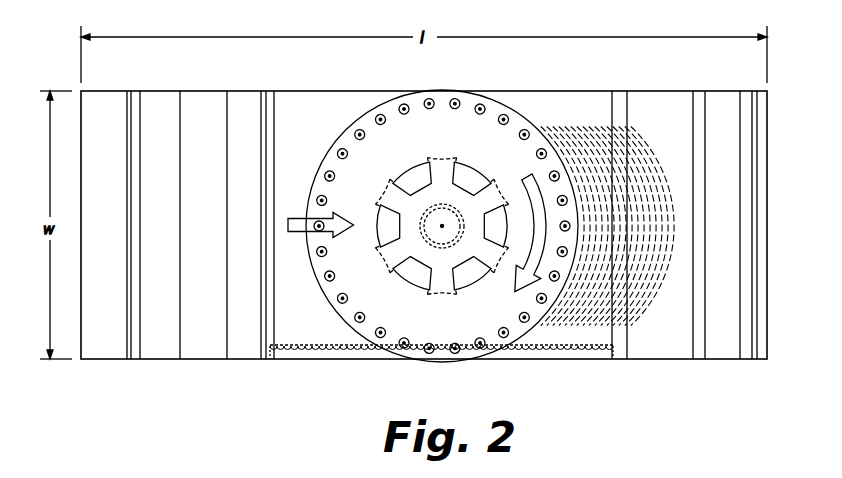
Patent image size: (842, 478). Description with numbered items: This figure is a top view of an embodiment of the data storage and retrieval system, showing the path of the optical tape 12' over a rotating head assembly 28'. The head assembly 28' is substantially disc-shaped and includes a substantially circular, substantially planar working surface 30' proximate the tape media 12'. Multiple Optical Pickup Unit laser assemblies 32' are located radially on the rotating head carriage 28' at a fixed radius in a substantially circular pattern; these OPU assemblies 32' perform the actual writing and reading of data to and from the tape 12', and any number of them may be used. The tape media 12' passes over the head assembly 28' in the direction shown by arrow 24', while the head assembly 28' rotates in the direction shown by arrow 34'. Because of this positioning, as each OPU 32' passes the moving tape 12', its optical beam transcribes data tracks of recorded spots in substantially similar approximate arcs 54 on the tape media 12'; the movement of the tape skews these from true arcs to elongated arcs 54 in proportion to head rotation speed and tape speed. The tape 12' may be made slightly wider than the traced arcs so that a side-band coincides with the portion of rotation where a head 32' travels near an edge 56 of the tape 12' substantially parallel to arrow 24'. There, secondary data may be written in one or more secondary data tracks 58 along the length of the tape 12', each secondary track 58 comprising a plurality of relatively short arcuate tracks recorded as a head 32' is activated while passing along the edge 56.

The optical tape 12' is at (424, 207).
The arrow 24' is at (275, 252).
The head assembly 28' is at (429, 209).
The working surface 30' is at (384, 288).
The Optical Pickup Unit (OPU) laser assemblies 32' is at (442, 205).
The arrow 34' is at (450, 181).
The arcs 54 is at (580, 121).
The edge 56 is at (374, 359).
The secondary data tracks 58 is at (525, 350).